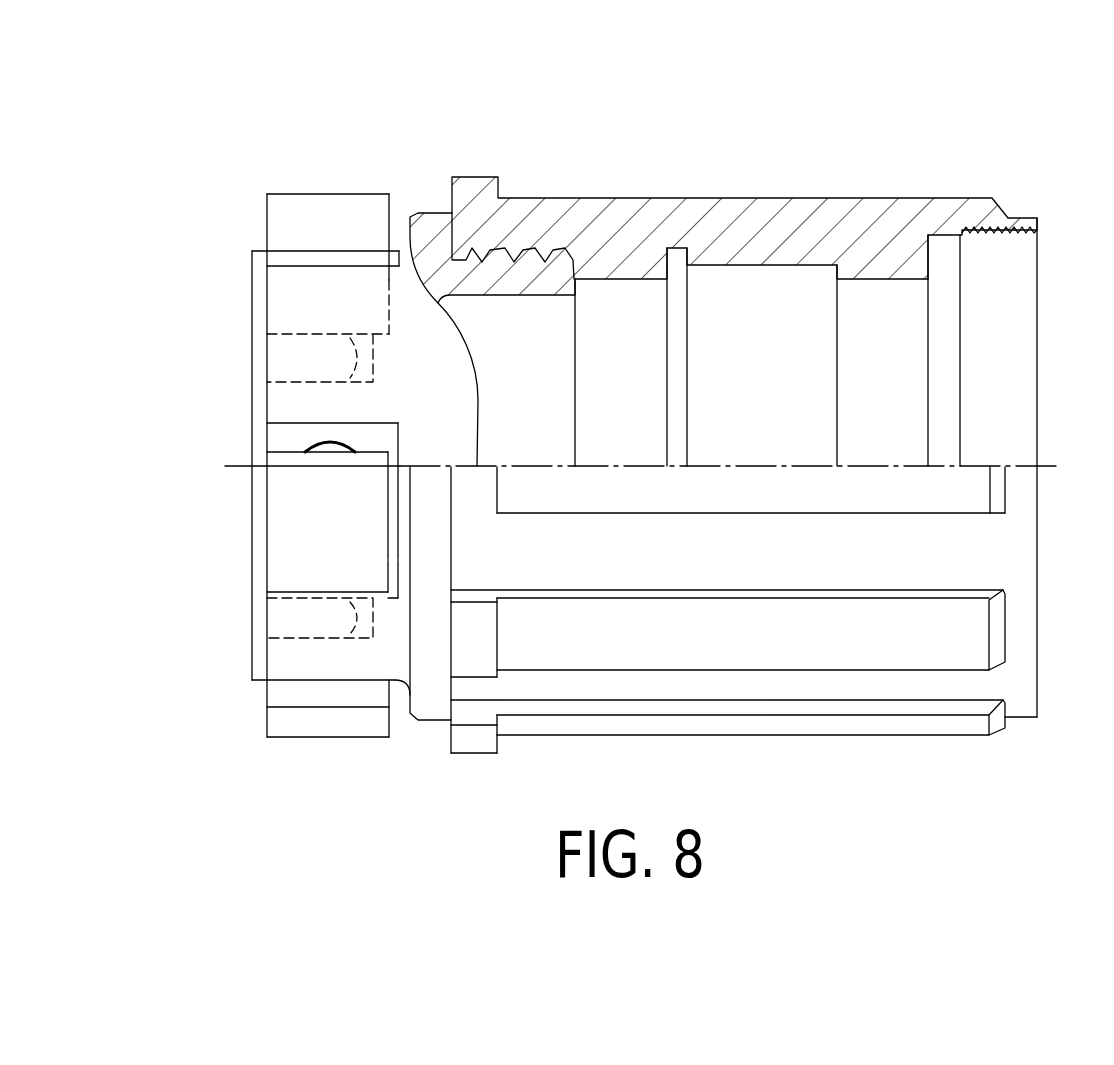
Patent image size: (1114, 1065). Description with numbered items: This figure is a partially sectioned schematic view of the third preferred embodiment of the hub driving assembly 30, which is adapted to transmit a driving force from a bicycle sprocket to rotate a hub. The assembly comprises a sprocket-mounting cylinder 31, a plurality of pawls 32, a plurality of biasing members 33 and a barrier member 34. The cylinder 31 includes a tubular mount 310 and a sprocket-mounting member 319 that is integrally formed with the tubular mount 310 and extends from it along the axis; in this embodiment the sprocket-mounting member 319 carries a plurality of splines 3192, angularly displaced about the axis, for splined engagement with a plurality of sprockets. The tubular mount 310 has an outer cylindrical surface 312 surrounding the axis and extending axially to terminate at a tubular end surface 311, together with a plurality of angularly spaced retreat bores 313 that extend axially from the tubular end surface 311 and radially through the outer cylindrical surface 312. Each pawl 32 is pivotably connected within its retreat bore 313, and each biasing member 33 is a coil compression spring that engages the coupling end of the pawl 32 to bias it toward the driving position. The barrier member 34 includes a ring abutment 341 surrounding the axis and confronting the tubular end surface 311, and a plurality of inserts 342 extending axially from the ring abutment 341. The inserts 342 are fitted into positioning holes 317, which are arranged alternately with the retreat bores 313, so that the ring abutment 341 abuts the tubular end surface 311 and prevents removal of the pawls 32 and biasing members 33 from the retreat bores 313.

The hub driving assembly 30 is at (842, 152).
The sprocket-mounting cylinder 31 is at (540, 70).
The tubular mount 310 is at (412, 208).
The sprocket-mounting member 319 is at (562, 205).
The splines 3192 is at (913, 723).
The tubular end surface 311 is at (267, 287).
The outer cylindrical surface 312 is at (317, 680).
The retreat bores 313 is at (393, 557).
The positioning holes 317 is at (350, 637).
The pawls 32 is at (330, 527).
The biasing members 33 is at (307, 450).
The barrier member 34 is at (250, 562).
The ring abutment 341 is at (257, 613).
The inserts 342 is at (267, 357).